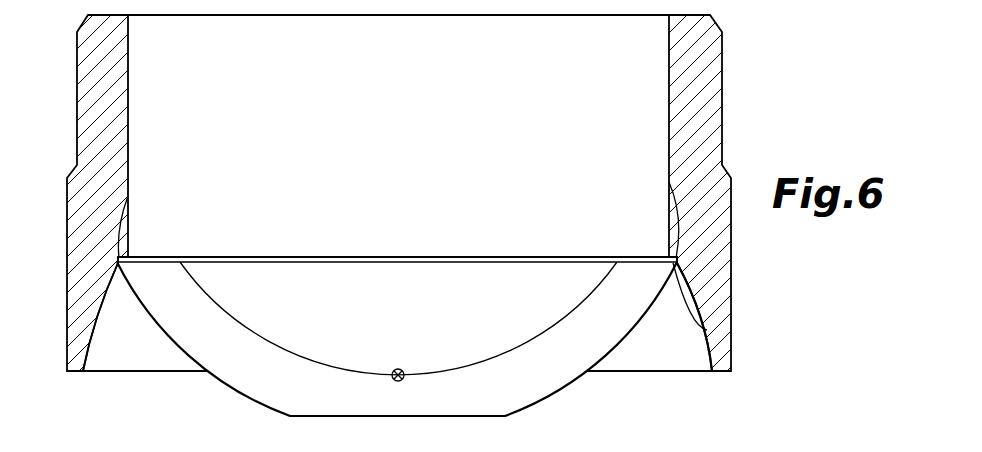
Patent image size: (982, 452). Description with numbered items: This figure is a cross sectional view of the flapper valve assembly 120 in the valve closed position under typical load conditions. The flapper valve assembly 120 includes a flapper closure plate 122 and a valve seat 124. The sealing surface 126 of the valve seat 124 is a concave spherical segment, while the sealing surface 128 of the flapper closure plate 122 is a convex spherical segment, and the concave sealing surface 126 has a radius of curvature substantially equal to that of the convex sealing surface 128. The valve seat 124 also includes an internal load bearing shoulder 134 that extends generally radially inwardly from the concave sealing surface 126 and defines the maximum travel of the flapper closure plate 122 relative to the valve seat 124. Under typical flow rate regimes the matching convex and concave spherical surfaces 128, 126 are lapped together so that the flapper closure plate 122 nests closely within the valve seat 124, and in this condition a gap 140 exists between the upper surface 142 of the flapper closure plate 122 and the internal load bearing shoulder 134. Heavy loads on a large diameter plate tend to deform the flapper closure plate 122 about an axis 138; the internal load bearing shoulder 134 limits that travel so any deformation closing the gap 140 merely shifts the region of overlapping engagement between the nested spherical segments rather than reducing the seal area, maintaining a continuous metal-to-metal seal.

The flapper valve assembly 120 is at (749, 61).
The flapper closure plate 122 is at (547, 382).
The valve seat 124 is at (717, 115).
The sealing surface 126 is at (707, 345).
The sealing surface 128 is at (707, 330).
The internal load bearing shoulder 134 is at (128, 196).
The axis 138 is at (398, 369).
The gap 140 is at (653, 193).
The upper surface 142 is at (160, 272).